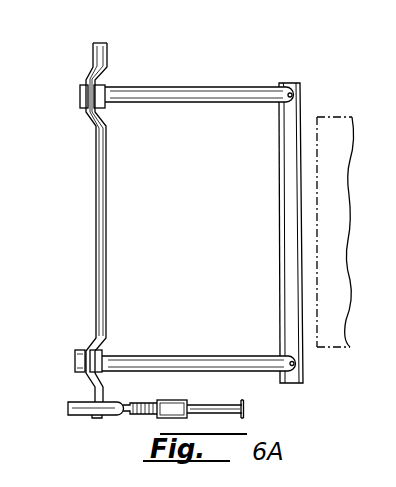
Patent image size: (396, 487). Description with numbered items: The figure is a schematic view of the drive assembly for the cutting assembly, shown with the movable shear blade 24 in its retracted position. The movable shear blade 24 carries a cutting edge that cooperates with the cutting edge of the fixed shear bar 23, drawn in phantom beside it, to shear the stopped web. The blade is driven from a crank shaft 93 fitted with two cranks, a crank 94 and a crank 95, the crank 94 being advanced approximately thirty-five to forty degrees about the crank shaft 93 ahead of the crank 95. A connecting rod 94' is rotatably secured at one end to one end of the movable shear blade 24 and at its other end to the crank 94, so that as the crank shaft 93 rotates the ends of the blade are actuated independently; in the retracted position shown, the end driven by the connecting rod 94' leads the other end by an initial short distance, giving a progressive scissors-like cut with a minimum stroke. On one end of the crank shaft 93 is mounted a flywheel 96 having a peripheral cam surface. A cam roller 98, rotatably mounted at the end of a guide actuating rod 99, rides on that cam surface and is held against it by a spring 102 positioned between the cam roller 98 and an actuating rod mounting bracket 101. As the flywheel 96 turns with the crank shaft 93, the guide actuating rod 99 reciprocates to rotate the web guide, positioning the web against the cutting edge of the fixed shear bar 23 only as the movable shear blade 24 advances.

The fixed shear bar 23 is at (346, 166).
The movable shear blade 24 is at (284, 162).
The crank shaft 93 is at (106, 194).
The crank 94 is at (67, 349).
The connecting rod 94' is at (193, 351).
The crank 95 is at (197, 91).
The flywheel 96 is at (72, 402).
The cam roller 98 is at (131, 403).
The guide actuating rod 99 is at (212, 407).
The actuating rod mounting bracket 101 is at (185, 400).
The spring 102 is at (179, 386).